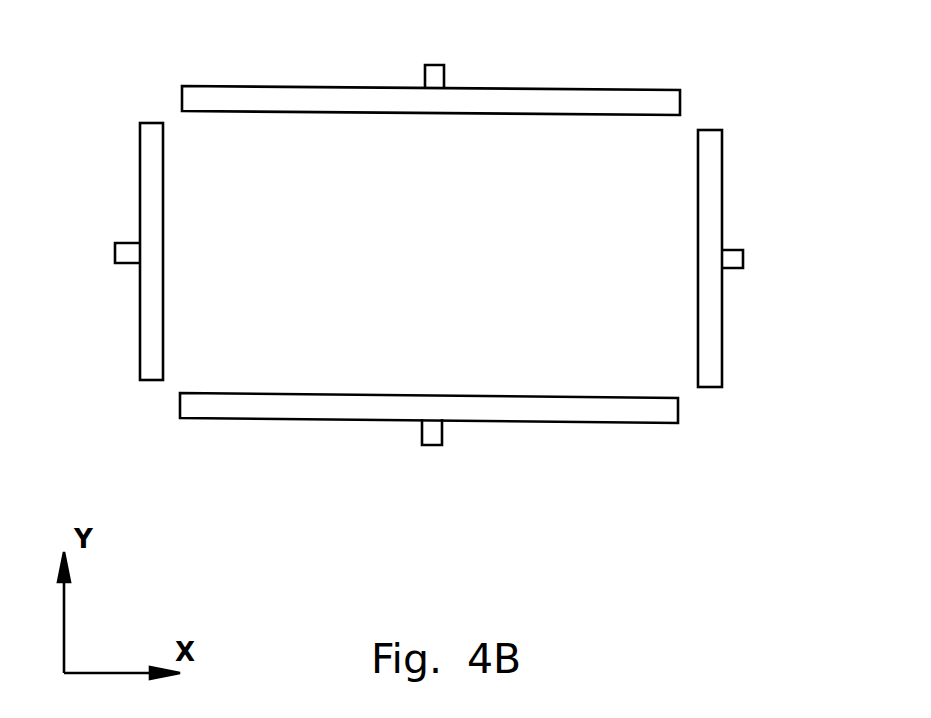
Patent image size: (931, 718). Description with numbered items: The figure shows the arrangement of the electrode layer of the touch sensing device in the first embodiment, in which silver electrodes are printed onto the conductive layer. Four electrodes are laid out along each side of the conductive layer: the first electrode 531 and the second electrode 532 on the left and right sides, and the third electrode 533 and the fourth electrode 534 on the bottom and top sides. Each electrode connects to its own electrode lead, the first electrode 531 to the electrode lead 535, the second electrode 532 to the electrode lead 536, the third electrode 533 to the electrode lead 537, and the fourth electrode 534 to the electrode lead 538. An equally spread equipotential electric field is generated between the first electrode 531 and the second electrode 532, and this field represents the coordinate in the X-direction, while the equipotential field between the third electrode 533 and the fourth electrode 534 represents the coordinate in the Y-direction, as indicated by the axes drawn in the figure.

The first electrode 531 is at (127, 253).
The second electrode 532 is at (738, 255).
The third electrode 533 is at (430, 433).
The fourth electrode 534 is at (433, 82).
The electrode lead 535 is at (152, 160).
The electrode lead 536 is at (710, 160).
The electrode lead 537 is at (522, 407).
The electrode lead 538 is at (507, 107).